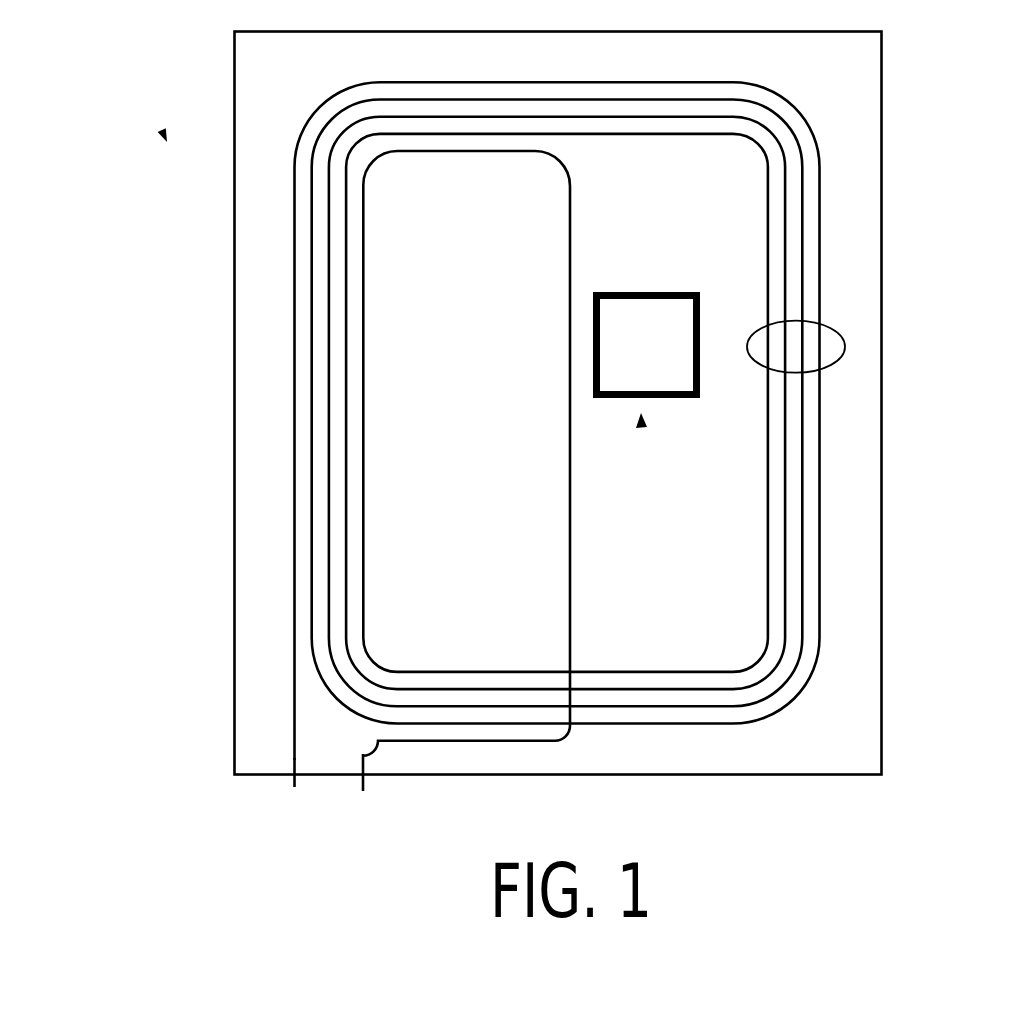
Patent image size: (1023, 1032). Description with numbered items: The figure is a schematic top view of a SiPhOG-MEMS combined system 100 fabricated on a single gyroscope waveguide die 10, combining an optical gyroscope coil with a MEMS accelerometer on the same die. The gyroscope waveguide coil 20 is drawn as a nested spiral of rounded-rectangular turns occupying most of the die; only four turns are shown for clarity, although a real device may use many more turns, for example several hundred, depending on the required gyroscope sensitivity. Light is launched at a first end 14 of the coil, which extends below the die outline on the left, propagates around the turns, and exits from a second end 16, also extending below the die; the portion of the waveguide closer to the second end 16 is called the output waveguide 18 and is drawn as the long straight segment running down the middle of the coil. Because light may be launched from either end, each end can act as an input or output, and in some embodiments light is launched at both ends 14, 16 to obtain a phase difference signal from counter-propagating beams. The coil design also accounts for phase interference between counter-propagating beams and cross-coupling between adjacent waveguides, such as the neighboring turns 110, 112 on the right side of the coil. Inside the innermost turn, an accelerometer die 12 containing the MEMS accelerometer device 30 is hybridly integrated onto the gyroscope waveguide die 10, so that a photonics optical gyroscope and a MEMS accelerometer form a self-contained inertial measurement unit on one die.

The SiPhOG-MEMS combined system 100 is at (165, 137).
The gyroscope waveguide die 10 is at (882, 123).
The accelerometer die 12 is at (657, 292).
The first end 14 is at (294, 787).
The second end 16 is at (363, 791).
The output waveguide 18 is at (571, 569).
The gyroscope waveguide coil 20 is at (840, 337).
The accelerometer device 30 is at (642, 420).
The adjacent waveguide 110 is at (769, 444).
The adjacent waveguide 112 is at (787, 492).